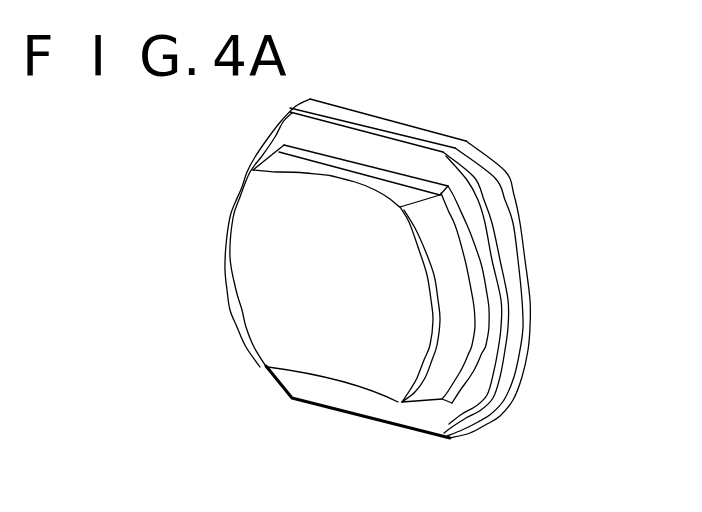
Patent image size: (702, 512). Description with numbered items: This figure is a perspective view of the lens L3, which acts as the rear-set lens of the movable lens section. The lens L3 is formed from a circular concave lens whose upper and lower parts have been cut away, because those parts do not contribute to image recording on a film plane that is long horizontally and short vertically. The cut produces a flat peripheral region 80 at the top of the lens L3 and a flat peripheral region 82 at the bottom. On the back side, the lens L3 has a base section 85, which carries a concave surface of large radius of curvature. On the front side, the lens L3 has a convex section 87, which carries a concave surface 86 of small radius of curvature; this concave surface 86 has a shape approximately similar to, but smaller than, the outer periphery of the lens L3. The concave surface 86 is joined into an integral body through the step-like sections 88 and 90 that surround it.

The flat peripheral region 80 is at (409, 127).
The flat peripheral region 82 is at (390, 424).
The base section 85 is at (510, 202).
The concave surface 86 is at (308, 323).
The convex section 87 is at (252, 266).
The step-like section 88 is at (281, 163).
The step-like section 90 is at (460, 325).
The lens L3 is at (533, 112).